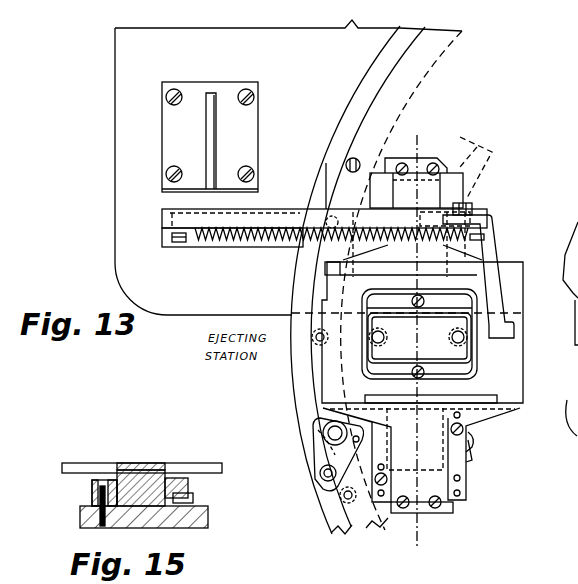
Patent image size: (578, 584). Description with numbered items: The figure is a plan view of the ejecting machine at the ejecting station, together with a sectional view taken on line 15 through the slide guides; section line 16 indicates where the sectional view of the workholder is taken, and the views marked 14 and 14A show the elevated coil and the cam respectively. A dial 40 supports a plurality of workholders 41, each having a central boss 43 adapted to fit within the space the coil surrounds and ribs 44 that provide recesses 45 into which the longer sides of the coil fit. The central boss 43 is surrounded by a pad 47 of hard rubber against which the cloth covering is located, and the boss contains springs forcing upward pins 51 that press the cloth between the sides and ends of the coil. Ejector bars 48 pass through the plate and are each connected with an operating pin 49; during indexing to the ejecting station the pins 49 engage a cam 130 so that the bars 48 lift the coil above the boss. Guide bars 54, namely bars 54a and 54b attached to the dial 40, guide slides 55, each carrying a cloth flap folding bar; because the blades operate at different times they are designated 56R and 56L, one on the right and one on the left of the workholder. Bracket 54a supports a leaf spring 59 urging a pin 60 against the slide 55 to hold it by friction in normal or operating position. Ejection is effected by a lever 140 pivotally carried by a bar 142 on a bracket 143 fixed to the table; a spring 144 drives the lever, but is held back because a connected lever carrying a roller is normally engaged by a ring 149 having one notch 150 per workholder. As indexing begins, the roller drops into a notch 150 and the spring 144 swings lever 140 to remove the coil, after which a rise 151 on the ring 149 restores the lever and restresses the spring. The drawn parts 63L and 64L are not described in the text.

In FIG. 13, the bracket 143 is at (210, 92).
In FIG. 13, the bar 142 is at (200, 222).
In FIG. 13, the spring 144 is at (236, 242).
In FIG. 13, the ring 149 is at (370, 78).
In FIG. 13, the notch 150 is at (323, 209).
In FIG. 13, the rise 151 is at (326, 165).
In FIG. 13, the section line 16— 16 is at (417, 135).
In FIG. 13, the section line 15— 15 is at (468, 455).
In FIG. 13, the view 14 is at (462, 530).
In FIG. 13, the view 14A is at (488, 191).
In FIG. 13, the bars 54 is at (469, 153).
In FIG. 13, the cam 130 is at (493, 160).
In FIG. 13, the right cloth folding blade 56R is at (463, 262).
In FIG. 13, the lever 140 is at (490, 290).
In FIG. 13, the workholder 41 is at (550, 375).
In FIG. 13, the ejector bar 48 is at (465, 298).
In FIG. 13, the central boss 43 is at (457, 353).
In FIG. 13, the pin 51 is at (462, 338).
In FIG. 13, the operating pin 49 is at (414, 298).
In FIG. 13, the rib 44 is at (356, 387).
In FIG. 13, the recess 45 is at (422, 411).
In FIG. 13, the pad 47 is at (514, 410).
In FIG. 13, the left cloth folding blade 56L is at (470, 413).
In FIG. 15, the left cloth folding blade 56L is at (152, 463).
In FIG. 13, the leaf spring 59 is at (472, 455).
In FIG. 15, the leaf spring 59 is at (195, 500).
In FIG. 13, the bar 54a is at (466, 502).
In FIG. 15, the bar 54a is at (192, 494).
In FIG. 13, the bar 54b is at (370, 455).
In FIG. 15, the bar 54b is at (92, 494).
In FIG. 13, the slide 55 is at (438, 514).
In FIG. 15, the slide 55 is at (166, 478).
In FIG. 13, the actuating lever 63L is at (328, 428).
In FIG. 13, the lever arm 64L is at (322, 466).
In FIG. 15, the dial 40 is at (80, 514).
In FIG. 15, the pin 60 is at (185, 508).